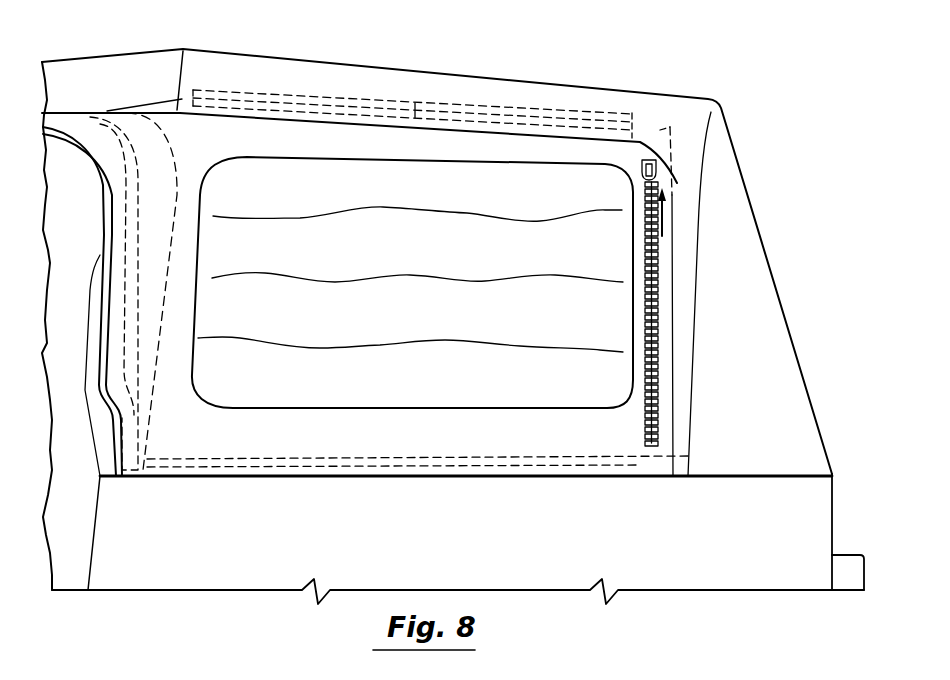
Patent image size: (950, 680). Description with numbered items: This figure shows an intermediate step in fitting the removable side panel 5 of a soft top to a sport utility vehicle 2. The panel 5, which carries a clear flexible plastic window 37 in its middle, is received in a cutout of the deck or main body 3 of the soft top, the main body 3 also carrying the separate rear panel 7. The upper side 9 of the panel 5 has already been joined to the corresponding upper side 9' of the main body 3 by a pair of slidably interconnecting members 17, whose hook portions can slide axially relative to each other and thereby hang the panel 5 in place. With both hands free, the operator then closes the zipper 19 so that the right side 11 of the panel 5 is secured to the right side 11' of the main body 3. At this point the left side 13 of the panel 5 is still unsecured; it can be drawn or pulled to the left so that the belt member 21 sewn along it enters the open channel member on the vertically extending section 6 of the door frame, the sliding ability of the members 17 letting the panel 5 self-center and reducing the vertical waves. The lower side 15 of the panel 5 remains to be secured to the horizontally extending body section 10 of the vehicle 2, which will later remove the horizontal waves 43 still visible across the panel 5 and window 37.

The vehicle 2 is at (200, 510).
The main body 3 is at (683, 94).
The side panel 5 is at (434, 258).
The vertically extending section of the door frame 6 is at (160, 213).
The rear panel 7 is at (767, 253).
The first side of the side panel 9 is at (412, 275).
The first side of the cutout section 9' is at (412, 69).
The horizontally extending body section 10 is at (353, 537).
The second side of the side panel 11 is at (613, 314).
The second side of the cutout section 11' is at (717, 301).
The third side of the side panel 13 is at (152, 253).
The fourth side of the side panel 15 is at (427, 437).
The slidably interconnecting members 17 is at (362, 97).
The zipper 19 is at (653, 273).
The belt member 21 is at (122, 316).
The window 37 is at (593, 190).
The horizontal waves 43 is at (343, 347).